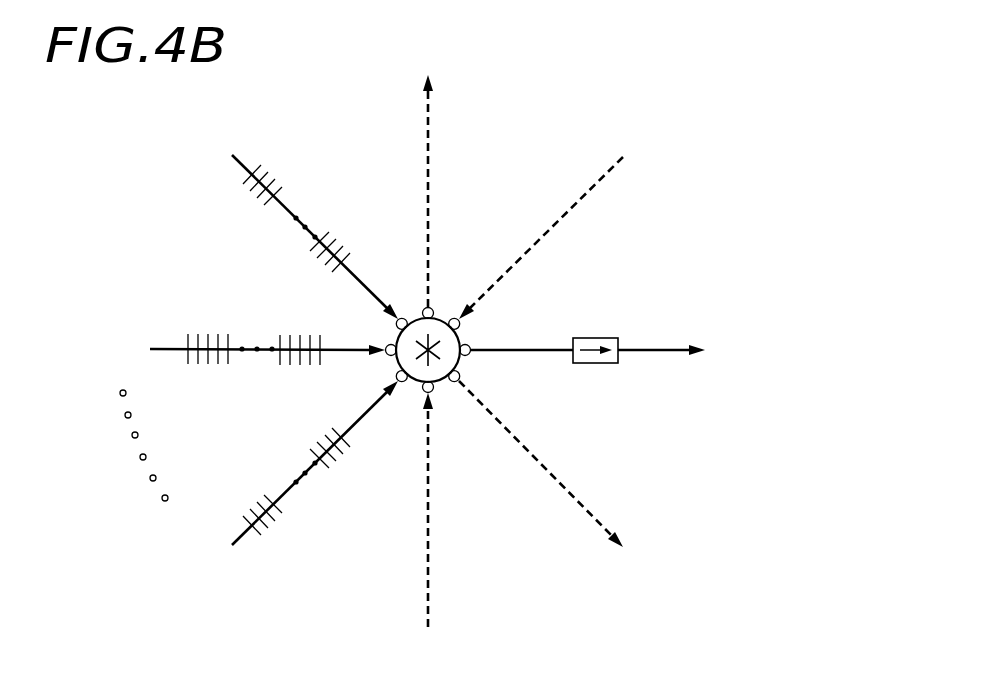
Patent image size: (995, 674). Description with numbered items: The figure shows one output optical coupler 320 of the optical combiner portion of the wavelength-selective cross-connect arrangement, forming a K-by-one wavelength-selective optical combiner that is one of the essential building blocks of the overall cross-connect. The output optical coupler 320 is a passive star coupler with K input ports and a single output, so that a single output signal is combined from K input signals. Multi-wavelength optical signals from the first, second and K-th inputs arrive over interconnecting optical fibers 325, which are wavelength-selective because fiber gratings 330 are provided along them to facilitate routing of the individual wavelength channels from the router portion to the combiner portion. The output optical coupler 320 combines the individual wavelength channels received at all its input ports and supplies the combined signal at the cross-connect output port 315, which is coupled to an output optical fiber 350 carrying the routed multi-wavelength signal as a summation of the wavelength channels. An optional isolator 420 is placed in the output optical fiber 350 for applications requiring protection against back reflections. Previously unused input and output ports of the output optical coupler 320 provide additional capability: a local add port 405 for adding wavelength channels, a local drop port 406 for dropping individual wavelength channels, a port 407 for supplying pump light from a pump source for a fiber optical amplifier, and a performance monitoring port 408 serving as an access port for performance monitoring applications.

The cross-connect output port 315 is at (470, 343).
The output optical coupler 320 is at (467, 360).
The interconnecting optical fiber 325 is at (243, 167).
The fiber grating 330 is at (335, 238).
The output optical fiber 350 is at (645, 350).
The local add port 405 is at (430, 535).
The local drop port 406 is at (553, 475).
The port for pump light 407 is at (548, 232).
The performance monitoring port 408 is at (432, 190).
The isolator 420 is at (600, 365).